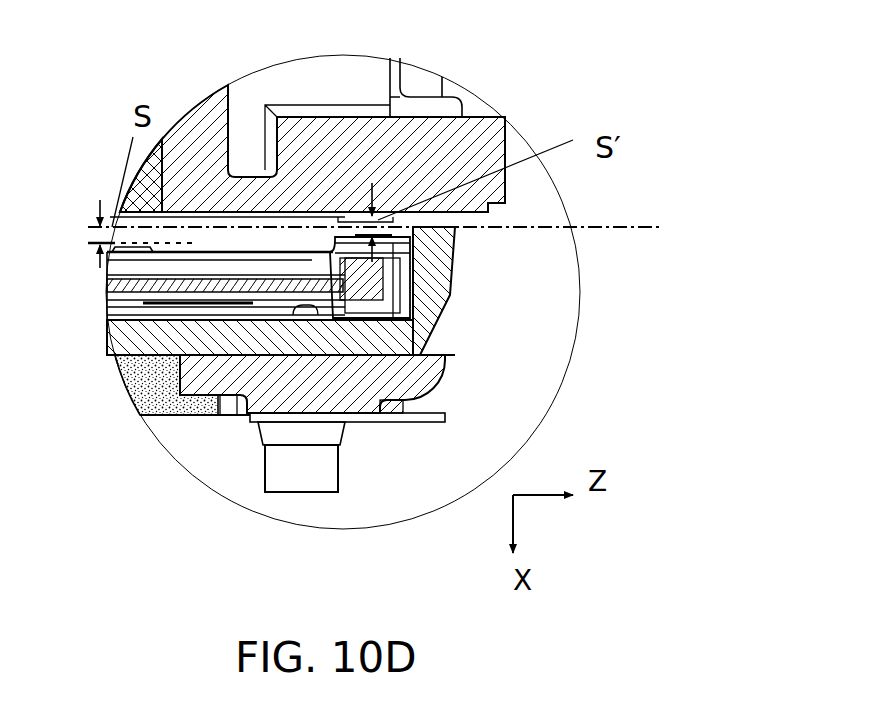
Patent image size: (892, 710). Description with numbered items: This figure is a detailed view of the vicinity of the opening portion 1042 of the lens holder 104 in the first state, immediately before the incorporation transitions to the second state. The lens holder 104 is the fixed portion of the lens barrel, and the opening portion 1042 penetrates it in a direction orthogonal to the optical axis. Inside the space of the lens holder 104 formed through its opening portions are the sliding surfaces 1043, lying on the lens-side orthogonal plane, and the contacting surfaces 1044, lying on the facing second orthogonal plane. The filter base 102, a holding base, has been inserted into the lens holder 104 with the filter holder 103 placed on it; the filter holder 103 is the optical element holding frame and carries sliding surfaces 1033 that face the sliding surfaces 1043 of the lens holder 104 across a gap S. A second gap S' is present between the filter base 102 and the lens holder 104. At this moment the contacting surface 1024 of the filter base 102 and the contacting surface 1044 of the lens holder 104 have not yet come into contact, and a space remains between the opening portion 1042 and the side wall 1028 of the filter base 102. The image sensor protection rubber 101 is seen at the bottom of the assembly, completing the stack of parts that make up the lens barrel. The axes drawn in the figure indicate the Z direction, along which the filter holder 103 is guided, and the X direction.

The image sensor protection rubber 101 is at (187, 415).
The filter base 102 is at (350, 330).
The filter holder 103 is at (360, 280).
The lens holder 104 is at (423, 140).
The contacting surface 1024 is at (143, 413).
The side wall 1028 is at (430, 278).
The sliding surface 1033 is at (135, 250).
The opening portion 1042 is at (435, 340).
The sliding surface 1043 is at (190, 217).
The contacting surface 1044 is at (218, 363).